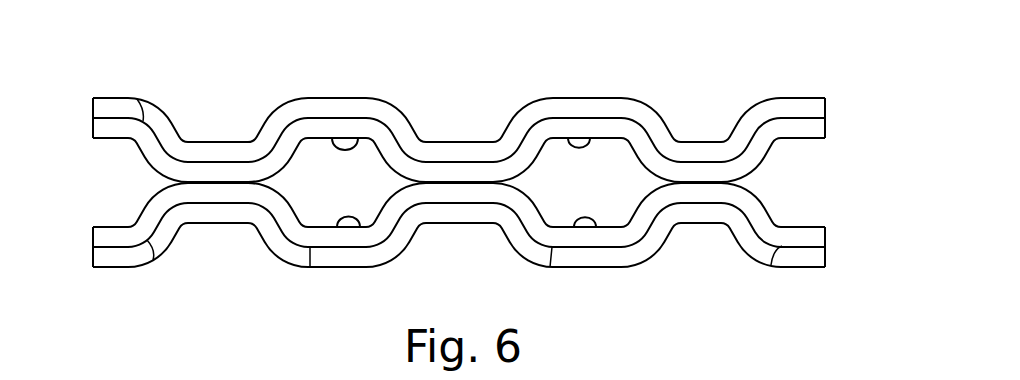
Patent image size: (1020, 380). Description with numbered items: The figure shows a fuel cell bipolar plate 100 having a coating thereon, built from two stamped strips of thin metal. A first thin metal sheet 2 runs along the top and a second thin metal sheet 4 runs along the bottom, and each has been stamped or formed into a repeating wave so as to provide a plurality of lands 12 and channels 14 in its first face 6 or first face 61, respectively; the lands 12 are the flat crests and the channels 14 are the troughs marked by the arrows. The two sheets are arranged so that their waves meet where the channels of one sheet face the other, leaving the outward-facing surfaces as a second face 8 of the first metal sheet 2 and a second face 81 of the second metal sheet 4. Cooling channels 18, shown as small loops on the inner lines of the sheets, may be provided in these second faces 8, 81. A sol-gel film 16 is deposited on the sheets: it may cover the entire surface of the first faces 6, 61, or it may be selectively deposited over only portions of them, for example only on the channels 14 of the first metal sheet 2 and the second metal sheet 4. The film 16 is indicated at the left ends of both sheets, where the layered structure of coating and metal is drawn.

The corrugated composite structure 100 is at (845, 105).
The first thin metal sheet 2 is at (112, 128).
The second thin metal sheet 4 is at (97, 233).
The first face 6 is at (113, 108).
The first face 61 is at (120, 260).
The sol-gel film 16 is at (110, 110).
The second face 8 is at (809, 156).
The second face 81 is at (809, 200).
The lands 12 is at (137, 99).
The channels 14 is at (216, 115).
The cooling channels 18 is at (356, 148).